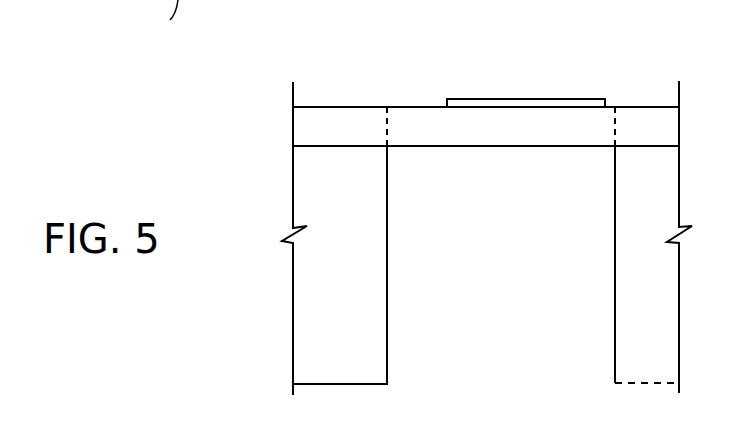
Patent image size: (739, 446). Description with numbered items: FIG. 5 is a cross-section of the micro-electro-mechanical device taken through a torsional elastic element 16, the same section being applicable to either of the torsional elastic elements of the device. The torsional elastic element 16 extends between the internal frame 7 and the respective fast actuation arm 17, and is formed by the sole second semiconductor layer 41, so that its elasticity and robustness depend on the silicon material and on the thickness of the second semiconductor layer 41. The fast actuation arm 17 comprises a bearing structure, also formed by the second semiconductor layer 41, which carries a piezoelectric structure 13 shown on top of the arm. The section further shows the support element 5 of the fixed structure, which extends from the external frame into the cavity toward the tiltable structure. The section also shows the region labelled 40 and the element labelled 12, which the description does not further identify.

The support element 5 is at (626, 269).
The internal frame 7 is at (351, 271).
The substrate 12 is at (152, 433).
The piezoelectric structure 13 is at (470, 105).
The torsional elastic element 16 is at (421, 120).
The fast actuation arm 17 is at (533, 120).
The wall 40 is at (314, 194).
The second semiconductor layer 41 is at (314, 126).